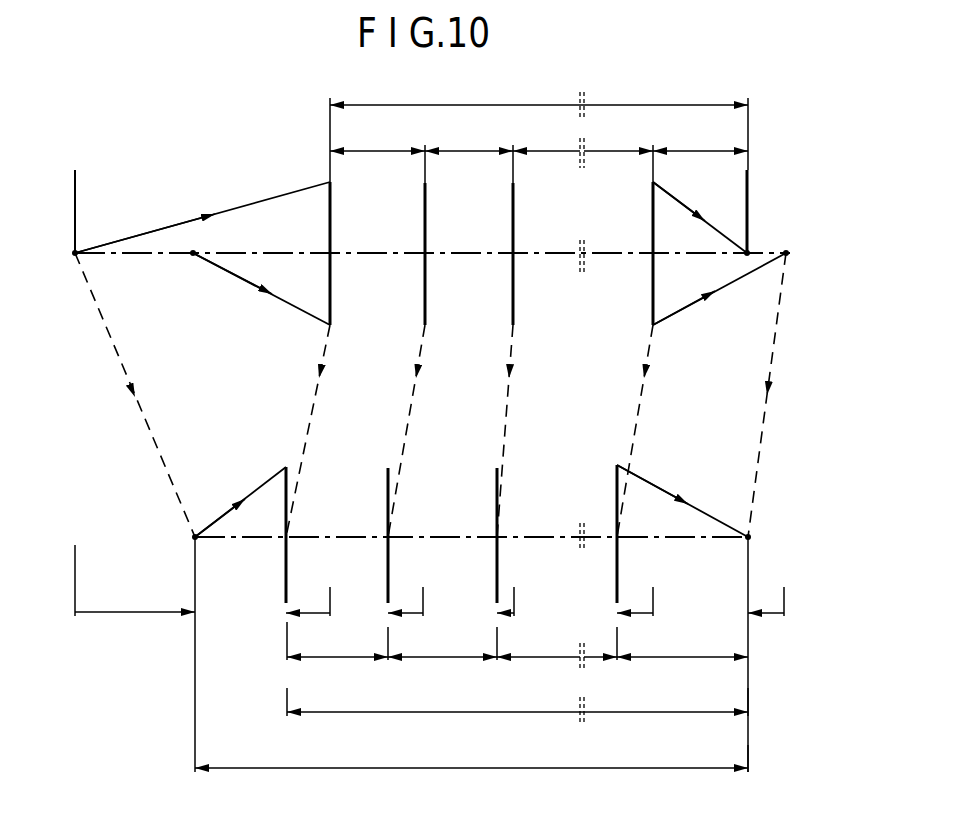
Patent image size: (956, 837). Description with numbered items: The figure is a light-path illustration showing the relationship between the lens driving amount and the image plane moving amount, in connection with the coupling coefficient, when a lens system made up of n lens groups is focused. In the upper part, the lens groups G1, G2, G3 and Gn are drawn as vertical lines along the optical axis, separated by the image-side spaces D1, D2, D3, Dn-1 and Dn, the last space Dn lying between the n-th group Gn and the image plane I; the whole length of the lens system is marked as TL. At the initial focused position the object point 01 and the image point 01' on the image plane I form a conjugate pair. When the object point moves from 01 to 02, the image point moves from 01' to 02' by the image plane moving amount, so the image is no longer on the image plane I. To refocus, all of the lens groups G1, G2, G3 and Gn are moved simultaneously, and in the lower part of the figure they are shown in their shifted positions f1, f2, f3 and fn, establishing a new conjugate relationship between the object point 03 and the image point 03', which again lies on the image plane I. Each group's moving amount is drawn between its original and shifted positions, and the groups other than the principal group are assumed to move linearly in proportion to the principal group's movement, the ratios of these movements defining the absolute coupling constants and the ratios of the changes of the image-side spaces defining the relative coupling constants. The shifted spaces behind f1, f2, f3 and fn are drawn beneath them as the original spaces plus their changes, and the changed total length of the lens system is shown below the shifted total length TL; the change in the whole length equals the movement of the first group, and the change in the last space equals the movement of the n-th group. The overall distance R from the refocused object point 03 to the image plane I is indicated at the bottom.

The object point 01 is at (60, 213).
The moved object point 02 is at (180, 269).
The refocused object point 03 is at (176, 643).
The initial image point 01' is at (768, 229).
The moved image point 02' is at (808, 274).
The refocused image point 03' is at (772, 640).
The first lens group G1 is at (330, 225).
The second lens group G2 is at (425, 225).
The third lens group G3 is at (513, 225).
The n-th lens group Gn is at (653, 216).
The first lens group after focusing f1 is at (278, 549).
The second lens group after focusing f2 is at (379, 549).
The third lens group after focusing f3 is at (484, 549).
The n-th lens group after focusing fn is at (610, 549).
The image plane I is at (747, 190).
The length of the whole lens system TL is at (550, 103).
The image-side space of first lens group D1 is at (387, 148).
The image-side space of second lens group D2 is at (486, 148).
The image-side space of third lens group D3 is at (568, 148).
The image-side space of (n-1)-th lens group Dn-1 is at (628, 148).
The image-side space of n-th lens group Dn is at (720, 148).
The object-to-image distance R is at (510, 770).